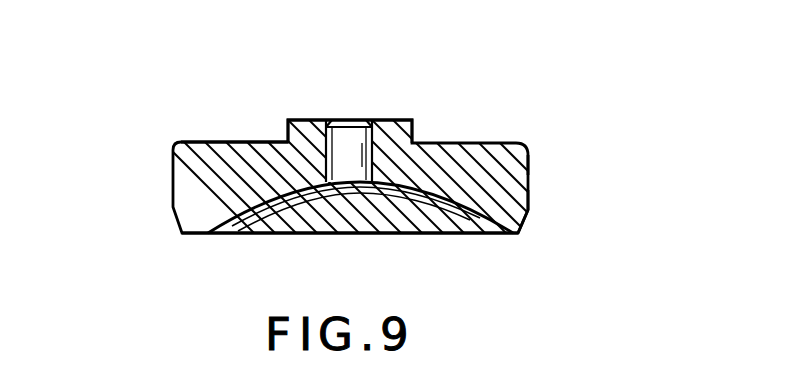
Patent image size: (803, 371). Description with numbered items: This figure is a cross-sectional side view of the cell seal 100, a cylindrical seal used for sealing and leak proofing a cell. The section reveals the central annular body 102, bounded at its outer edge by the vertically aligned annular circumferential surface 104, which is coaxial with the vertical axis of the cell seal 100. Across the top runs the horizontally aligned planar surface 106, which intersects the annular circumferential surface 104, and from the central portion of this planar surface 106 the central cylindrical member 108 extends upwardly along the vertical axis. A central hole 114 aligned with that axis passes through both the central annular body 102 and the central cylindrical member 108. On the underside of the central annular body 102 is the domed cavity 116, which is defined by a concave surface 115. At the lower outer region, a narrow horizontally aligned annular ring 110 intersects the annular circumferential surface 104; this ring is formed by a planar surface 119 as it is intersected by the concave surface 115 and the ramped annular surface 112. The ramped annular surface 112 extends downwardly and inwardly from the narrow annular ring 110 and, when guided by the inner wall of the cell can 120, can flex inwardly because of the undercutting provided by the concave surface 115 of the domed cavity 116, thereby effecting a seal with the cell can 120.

The cell seal 100 is at (556, 123).
The central annular body 102 is at (452, 162).
The annular circumferential surface 104 is at (530, 172).
The planar surface 106 is at (218, 142).
The central cylindrical member 108 is at (382, 130).
The narrow annular ring 110 is at (530, 202).
The ramped annular surface 112 is at (523, 227).
The central hole 114 is at (338, 124).
The concave surface 115 is at (450, 208).
The domed cavity 116 is at (298, 212).
The planar surface 119 is at (503, 225).
The cell can 120 is at (192, 237).